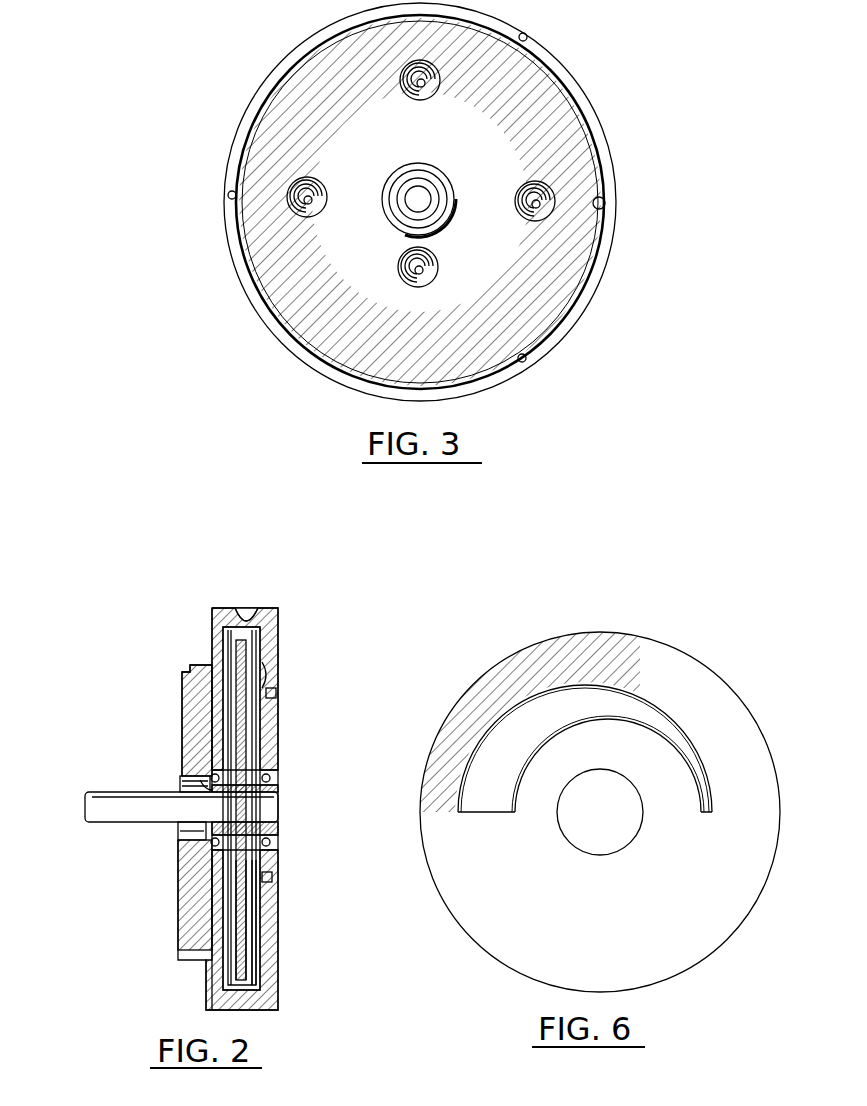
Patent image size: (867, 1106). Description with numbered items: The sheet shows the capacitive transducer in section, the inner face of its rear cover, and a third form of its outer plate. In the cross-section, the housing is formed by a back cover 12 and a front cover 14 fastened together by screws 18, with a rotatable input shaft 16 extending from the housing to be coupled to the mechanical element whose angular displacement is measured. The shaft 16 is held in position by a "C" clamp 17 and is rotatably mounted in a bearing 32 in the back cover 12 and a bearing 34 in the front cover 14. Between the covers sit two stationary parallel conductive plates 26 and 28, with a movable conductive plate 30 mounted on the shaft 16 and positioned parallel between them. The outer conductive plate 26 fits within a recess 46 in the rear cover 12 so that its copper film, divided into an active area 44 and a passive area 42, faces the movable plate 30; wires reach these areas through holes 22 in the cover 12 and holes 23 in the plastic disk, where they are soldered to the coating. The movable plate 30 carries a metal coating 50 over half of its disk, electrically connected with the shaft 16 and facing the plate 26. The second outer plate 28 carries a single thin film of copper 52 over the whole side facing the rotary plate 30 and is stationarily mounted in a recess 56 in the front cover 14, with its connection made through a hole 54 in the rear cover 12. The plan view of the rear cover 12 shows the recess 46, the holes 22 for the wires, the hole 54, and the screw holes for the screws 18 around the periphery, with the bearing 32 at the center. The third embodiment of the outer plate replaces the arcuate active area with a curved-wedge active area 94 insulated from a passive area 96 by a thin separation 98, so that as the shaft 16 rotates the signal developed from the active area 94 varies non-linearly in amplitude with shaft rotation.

In FIG. 3, the back cover 12 is at (231, 135).
In FIG. 2, the back cover 12 is at (278, 990).
In FIG. 2, the front cover 14 is at (178, 898).
In FIG. 2, the input shaft 16 is at (85, 806).
In FIG. 2, the "C" clamp 17 is at (200, 830).
In FIG. 3, the screws 18 is at (528, 38).
In FIG. 3, the holes 22 is at (412, 88).
In FIG. 2, the holes 22 is at (278, 692).
In FIG. 2, the holes 23 is at (263, 672).
In FIG. 2, the conductive plate 26 is at (262, 612).
In FIG. 6, the conductive plate 26 is at (682, 657).
In FIG. 2, the conductive plate 28 is at (212, 610).
In FIG. 2, the movable conductive plate 30 is at (231, 612).
In FIG. 3, the bearing 32 is at (430, 165).
In FIG. 2, the bearing 32 is at (280, 782).
In FIG. 2, the bearing 34 is at (206, 790).
In FIG. 2, the passive area 42 is at (254, 955).
In FIG. 2, the active area 44 is at (280, 724).
In FIG. 3, the recess 46 is at (420, 202).
In FIG. 2, the recess 46 is at (241, 640).
In FIG. 2, the metal coating 50 is at (228, 688).
In FIG. 2, the thin film of copper 52 is at (242, 926).
In FIG. 3, the hole 54 is at (604, 199).
In FIG. 2, the recess 56 is at (205, 787).
In FIG. 6, the active area 94 is at (508, 776).
In FIG. 6, the passive area 96 is at (613, 892).
In FIG. 6, the separation 98 is at (560, 727).